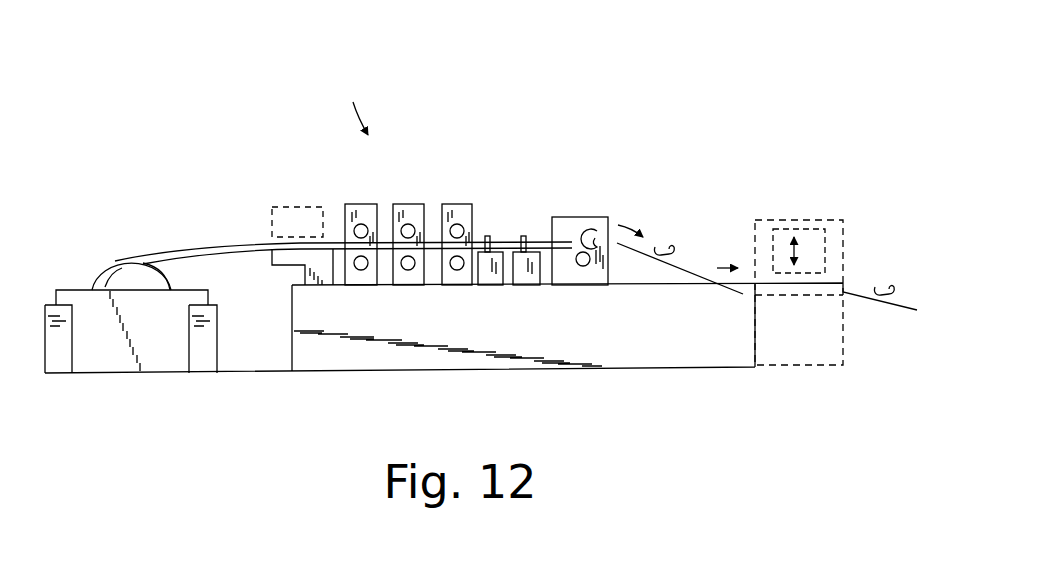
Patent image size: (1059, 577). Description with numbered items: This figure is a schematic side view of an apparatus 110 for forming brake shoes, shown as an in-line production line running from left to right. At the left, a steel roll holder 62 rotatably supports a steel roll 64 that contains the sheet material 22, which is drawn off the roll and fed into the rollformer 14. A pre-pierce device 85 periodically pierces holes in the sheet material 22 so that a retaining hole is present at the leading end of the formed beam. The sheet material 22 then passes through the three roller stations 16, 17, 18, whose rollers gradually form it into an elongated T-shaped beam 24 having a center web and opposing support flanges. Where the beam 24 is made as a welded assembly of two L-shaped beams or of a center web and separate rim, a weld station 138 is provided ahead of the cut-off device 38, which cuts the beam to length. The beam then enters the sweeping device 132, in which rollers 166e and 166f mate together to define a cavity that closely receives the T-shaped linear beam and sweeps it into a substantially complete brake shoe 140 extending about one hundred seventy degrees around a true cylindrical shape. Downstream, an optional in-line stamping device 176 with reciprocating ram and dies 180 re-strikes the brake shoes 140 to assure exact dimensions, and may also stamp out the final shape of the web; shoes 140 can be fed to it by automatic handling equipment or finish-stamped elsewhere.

The apparatus 110 is at (425, 105).
The rollformer 14 is at (350, 103).
The first roller station 16 is at (360, 205).
The second roller station 17 is at (408, 205).
The third roller station 18 is at (457, 205).
The sheet material 22 is at (223, 247).
The T-shaped beam 24 is at (503, 240).
The cut-off device 38 is at (530, 267).
The steel roll holder 62 is at (123, 365).
The steel roll 64 is at (123, 270).
The pre-pierce device 85 is at (296, 206).
The sweeping device 132 is at (577, 217).
The weld station 138 is at (487, 235).
The brake shoe 140 is at (678, 247).
The roller 166e is at (583, 266).
The top roller 166f is at (582, 233).
The in-line stamping device 176 is at (857, 215).
The reciprocating ram and dies 180 is at (825, 253).